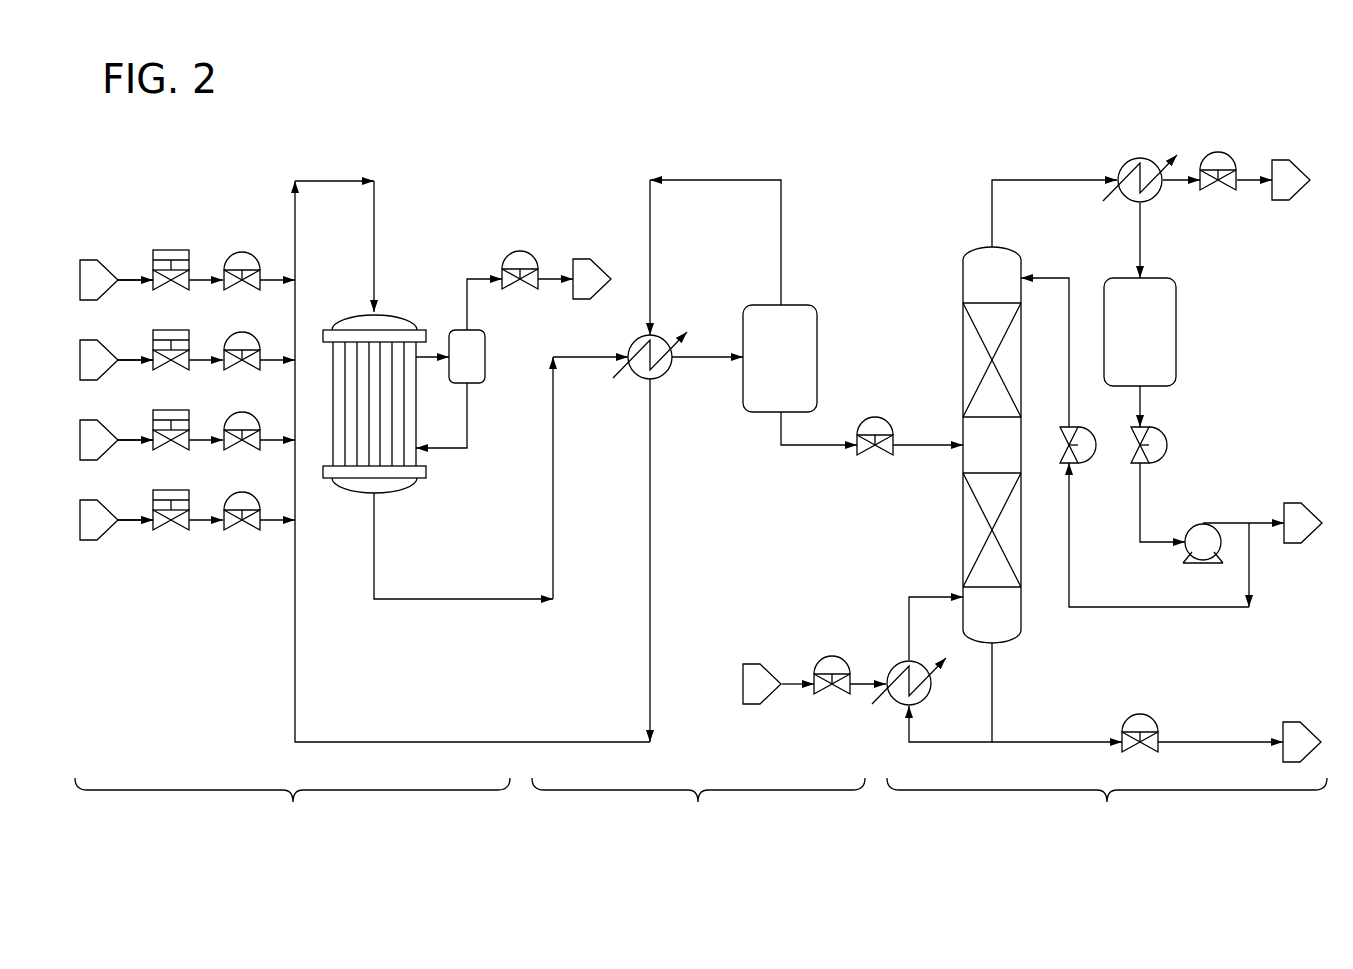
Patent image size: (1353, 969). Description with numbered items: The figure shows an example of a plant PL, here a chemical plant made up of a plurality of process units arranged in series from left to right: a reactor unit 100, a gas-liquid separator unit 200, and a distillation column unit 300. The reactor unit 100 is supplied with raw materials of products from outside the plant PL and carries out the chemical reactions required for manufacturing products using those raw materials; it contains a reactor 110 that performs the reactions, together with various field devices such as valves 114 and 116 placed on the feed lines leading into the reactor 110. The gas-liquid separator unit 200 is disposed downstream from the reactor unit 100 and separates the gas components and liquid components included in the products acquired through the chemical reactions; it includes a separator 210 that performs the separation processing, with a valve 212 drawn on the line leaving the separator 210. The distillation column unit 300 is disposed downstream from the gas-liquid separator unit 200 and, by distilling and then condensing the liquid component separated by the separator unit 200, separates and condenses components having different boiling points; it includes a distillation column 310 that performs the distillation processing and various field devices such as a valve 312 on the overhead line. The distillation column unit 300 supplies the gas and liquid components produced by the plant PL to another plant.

The plant PL is at (1293, 122).
The reactor unit 100 is at (362, 509).
The reactor 110 is at (394, 312).
The valve 114 is at (171, 250).
The valve 116 is at (242, 250).
The gas-liquid separator unit 200 is at (747, 508).
The separator 210 is at (800, 303).
The control valve 212 is at (875, 415).
The distillation column unit 300 is at (1035, 470).
The distillation column 310 is at (977, 246).
The valve 312 is at (1218, 150).